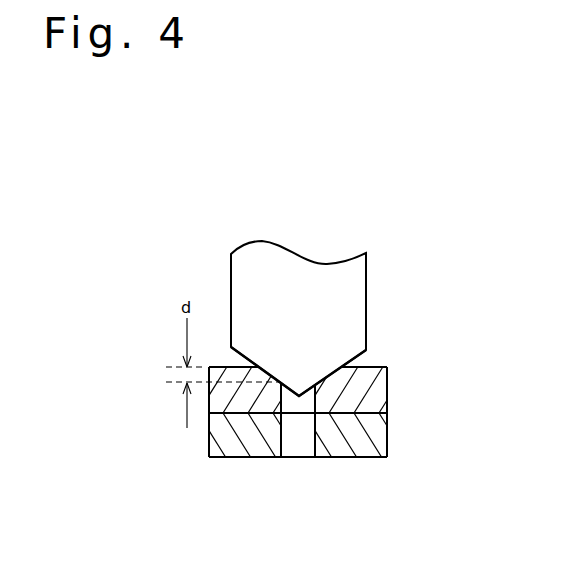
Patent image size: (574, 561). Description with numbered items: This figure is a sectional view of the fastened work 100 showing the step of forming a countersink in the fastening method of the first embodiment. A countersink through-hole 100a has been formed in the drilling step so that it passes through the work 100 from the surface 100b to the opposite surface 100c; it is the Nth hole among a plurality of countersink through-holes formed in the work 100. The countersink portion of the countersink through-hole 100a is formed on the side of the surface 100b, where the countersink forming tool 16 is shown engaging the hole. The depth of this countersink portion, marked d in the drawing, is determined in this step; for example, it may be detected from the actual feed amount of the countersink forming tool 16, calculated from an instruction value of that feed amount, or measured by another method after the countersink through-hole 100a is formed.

The countersink forming tool 16 is at (366, 285).
The work 100 is at (398, 412).
The countersink through-hole 100a is at (299, 462).
The surface 100b is at (372, 367).
The surface 100c is at (365, 460).